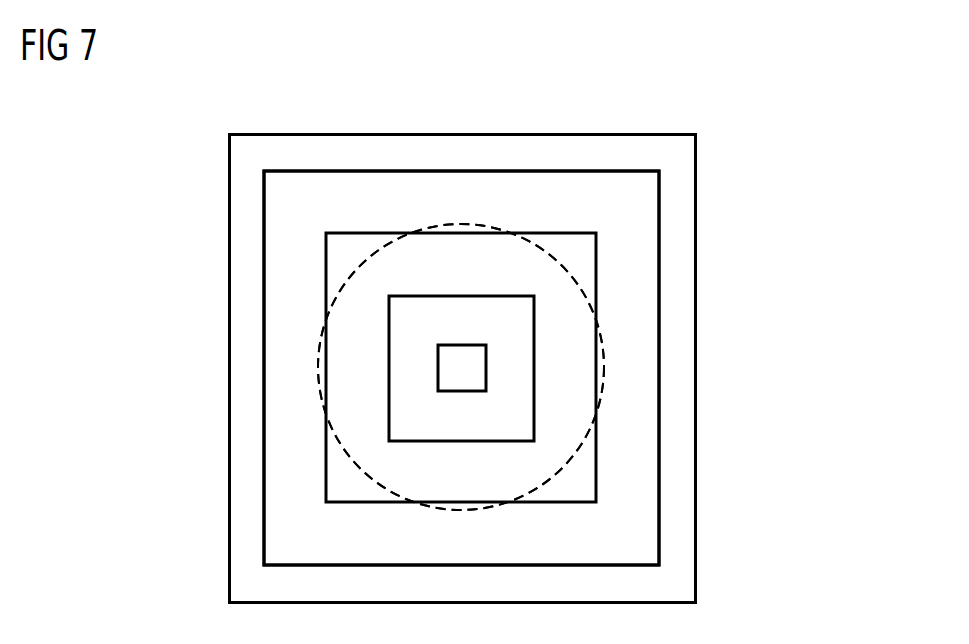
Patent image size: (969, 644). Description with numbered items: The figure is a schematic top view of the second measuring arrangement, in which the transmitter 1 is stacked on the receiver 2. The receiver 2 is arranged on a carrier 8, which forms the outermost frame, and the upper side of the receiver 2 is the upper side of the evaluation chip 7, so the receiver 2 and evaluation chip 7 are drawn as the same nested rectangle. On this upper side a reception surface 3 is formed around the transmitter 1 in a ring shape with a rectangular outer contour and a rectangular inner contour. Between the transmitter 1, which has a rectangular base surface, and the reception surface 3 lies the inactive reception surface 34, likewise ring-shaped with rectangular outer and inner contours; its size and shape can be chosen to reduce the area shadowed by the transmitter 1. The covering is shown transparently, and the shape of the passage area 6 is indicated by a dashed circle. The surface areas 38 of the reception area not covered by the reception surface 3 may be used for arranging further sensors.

The transmitter 1 is at (458, 360).
The receiver 2 is at (650, 293).
The evaluation chip 7 is at (650, 293).
The reception surface 3 is at (582, 255).
The passage area 6 is at (500, 227).
The carrier 8 is at (688, 367).
The inactive reception surface 34 is at (522, 373).
The surface areas 38 is at (459, 227).